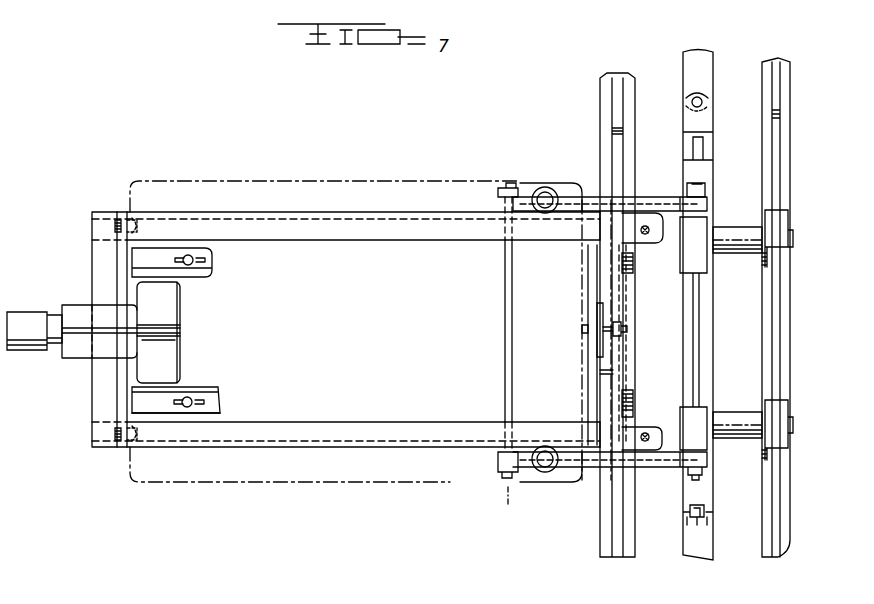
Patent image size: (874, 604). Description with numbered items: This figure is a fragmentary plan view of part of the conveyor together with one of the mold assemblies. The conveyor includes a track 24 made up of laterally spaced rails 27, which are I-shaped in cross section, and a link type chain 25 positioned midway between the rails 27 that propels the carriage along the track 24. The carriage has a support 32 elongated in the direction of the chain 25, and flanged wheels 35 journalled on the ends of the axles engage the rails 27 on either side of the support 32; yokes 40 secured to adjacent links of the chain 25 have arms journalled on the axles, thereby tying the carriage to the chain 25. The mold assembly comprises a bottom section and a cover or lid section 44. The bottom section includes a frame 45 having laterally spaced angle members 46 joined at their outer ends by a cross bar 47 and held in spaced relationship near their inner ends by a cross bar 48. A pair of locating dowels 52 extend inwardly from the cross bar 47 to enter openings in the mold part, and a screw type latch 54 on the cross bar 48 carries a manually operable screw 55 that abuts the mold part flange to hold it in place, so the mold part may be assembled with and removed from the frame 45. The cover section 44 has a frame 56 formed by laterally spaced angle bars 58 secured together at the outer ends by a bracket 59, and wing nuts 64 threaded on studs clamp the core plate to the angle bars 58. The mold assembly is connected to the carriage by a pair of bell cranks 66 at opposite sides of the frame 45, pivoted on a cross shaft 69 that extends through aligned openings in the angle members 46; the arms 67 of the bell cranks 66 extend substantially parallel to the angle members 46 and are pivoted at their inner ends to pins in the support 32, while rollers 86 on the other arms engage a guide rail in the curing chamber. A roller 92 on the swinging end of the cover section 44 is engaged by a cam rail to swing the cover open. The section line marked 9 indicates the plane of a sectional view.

The section line 9 is at (503, 408).
The track 24 is at (630, 73).
The link type chain 25 is at (715, 56).
The rails 27 is at (621, 123).
The support 32 is at (702, 338).
The flanged wheels 35 is at (633, 262).
The yokes 40 is at (731, 226).
The cover or lid section 44 is at (183, 323).
The frame 45 is at (403, 420).
The angle members 46 is at (446, 240).
The cross bar 47 is at (100, 386).
The cross bar 48 is at (597, 292).
The locating dowels 52 is at (137, 228).
The screw type latch 54 is at (606, 326).
The manually operable screw 55 is at (626, 331).
The frame 56 is at (223, 408).
The angle bars 58 is at (213, 268).
The bracket 59 is at (168, 372).
The wing nuts 64 is at (198, 402).
The bell cranks 66 is at (499, 193).
The arms 67 is at (568, 200).
The cross shaft 69 is at (508, 296).
The rollers 86 is at (545, 187).
The roller 92 is at (32, 318).